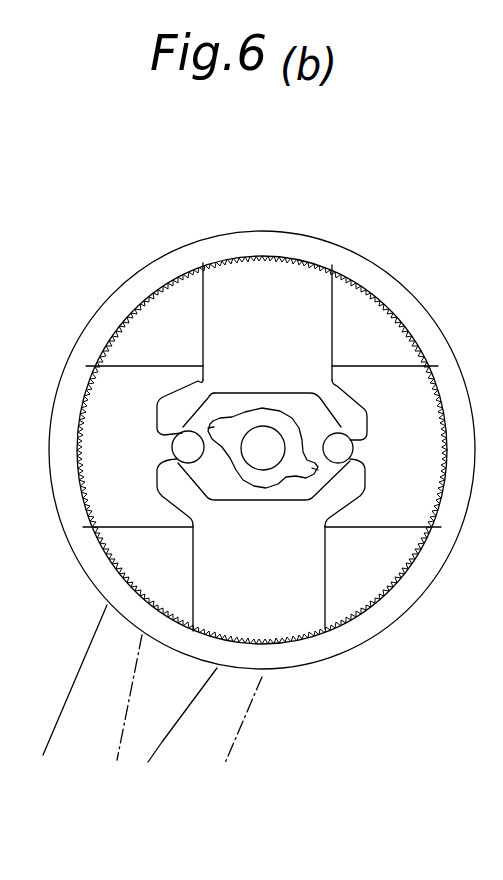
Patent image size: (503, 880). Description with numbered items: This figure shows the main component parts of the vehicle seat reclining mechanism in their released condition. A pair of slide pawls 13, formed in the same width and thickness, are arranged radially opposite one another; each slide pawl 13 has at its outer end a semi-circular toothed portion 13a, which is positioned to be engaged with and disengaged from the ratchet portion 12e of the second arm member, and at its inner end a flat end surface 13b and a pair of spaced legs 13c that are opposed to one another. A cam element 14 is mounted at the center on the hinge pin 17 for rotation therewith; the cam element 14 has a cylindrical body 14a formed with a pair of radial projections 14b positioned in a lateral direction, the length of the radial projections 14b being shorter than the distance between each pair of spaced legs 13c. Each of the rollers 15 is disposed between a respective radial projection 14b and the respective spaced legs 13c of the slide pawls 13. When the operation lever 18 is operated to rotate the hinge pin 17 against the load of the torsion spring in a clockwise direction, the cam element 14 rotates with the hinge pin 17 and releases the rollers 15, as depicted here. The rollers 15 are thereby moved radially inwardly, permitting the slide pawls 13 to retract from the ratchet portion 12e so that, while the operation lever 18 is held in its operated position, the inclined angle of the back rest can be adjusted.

The ratchet portion 12e is at (264, 256).
The slide pawls 13 is at (201, 300).
The semi-circular toothed portion 13a is at (292, 645).
The flat end surface 13b is at (257, 393).
The spaced legs 13c is at (161, 415).
The cam element 14 is at (260, 487).
The cylindrical body 14a is at (278, 475).
The radial projections 14b is at (212, 426).
The rollers 15 is at (177, 445).
The hinge pin 17 is at (255, 455).
The operation lever 18 is at (75, 716).